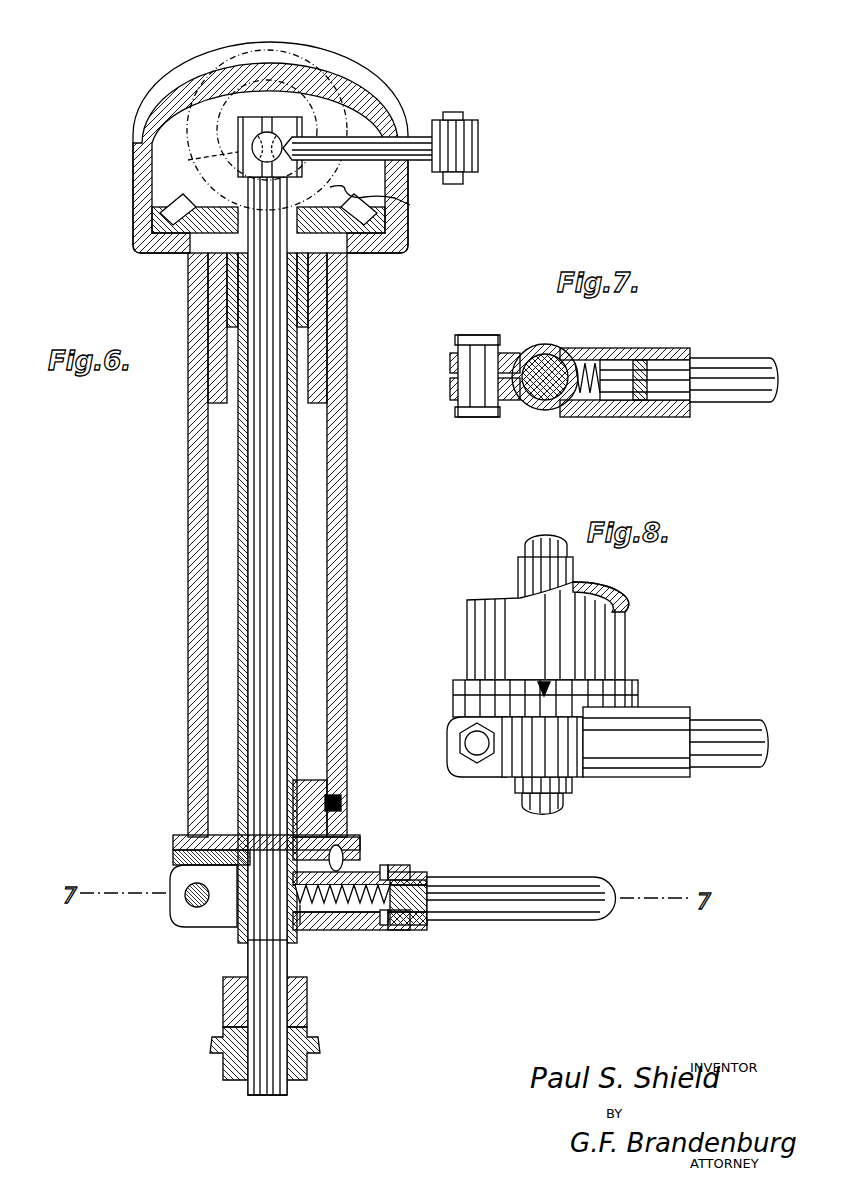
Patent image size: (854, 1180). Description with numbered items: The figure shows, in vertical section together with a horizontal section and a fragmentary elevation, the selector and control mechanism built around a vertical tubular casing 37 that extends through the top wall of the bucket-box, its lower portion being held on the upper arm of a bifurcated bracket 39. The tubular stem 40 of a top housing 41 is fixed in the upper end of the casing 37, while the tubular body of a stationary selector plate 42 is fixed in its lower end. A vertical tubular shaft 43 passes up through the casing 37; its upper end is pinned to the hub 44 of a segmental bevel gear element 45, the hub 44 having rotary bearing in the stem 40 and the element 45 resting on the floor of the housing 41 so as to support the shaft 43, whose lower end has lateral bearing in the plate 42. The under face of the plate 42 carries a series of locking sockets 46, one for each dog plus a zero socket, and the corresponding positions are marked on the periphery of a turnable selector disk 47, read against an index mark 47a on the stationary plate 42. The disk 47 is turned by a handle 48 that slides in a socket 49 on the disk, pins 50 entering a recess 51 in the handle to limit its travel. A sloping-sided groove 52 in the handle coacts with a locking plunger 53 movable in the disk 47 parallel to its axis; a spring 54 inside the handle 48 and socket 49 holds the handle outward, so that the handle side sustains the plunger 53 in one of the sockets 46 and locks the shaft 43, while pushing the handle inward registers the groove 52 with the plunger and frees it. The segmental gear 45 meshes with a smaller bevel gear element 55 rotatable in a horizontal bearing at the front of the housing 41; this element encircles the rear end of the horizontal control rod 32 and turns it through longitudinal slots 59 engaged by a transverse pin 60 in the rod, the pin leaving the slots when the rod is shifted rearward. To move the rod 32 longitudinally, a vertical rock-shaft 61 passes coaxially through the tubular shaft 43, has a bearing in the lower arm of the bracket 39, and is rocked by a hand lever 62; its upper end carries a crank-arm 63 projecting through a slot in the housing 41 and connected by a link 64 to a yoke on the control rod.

In FIG. 6, the control rod 32 is at (251, 130).
In FIG. 6, the tubular casing 37 is at (348, 485).
In FIG. 8, the tubular casing 37 is at (627, 610).
In FIG. 6, the bifurcated bracket 39 is at (215, 1055).
In FIG. 6, the tubular stem 40 is at (330, 312).
In FIG. 6, the top housing 41 is at (383, 72).
In FIG. 6, the stationary selector plate 42 is at (175, 838).
In FIG. 8, the stationary selector plate 42 is at (640, 685).
In FIG. 6, the tubular shaft 43 is at (300, 547).
In FIG. 7, the tubular shaft 43 is at (522, 415).
In FIG. 8, the tubular shaft 43 is at (577, 567).
In FIG. 6, the hub 44 is at (215, 283).
In FIG. 6, the segmental bevel gear element 45 is at (148, 250).
In FIG. 6, the locking sockets 46 is at (338, 855).
In FIG. 6, the selector disk 47 is at (173, 858).
In FIG. 8, the selector disk 47 is at (455, 713).
In FIG. 8, the index mark 47a is at (548, 684).
In FIG. 6, the handle 48 is at (520, 885).
In FIG. 7, the handle 48 is at (745, 362).
In FIG. 8, the handle 48 is at (742, 768).
In FIG. 6, the socket 49 is at (318, 930).
In FIG. 7, the socket 49 is at (588, 402).
In FIG. 6, the pins 50 is at (386, 866).
In FIG. 6, the recess 51 is at (400, 866).
In FIG. 7, the recess 51 is at (675, 410).
In FIG. 6, the groove 52 is at (372, 932).
In FIG. 7, the groove 52 is at (640, 352).
In FIG. 8, the groove 52 is at (596, 742).
In FIG. 6, the locking plunger 53 is at (345, 860).
In FIG. 6, the spring 54 is at (318, 930).
In FIG. 6, the bevel gear element 55 is at (410, 205).
In FIG. 6, the longitudinal slots 59 is at (285, 172).
In FIG. 6, the transverse pin 60 is at (304, 126).
In FIG. 6, the rock-shaft 61 is at (280, 630).
In FIG. 7, the rock-shaft 61 is at (550, 342).
In FIG. 8, the rock-shaft 61 is at (527, 545).
In FIG. 6, the hand lever 62 is at (225, 1000).
In FIG. 6, the crank-arm 63 is at (406, 108).
In FIG. 6, the link 64 is at (480, 130).